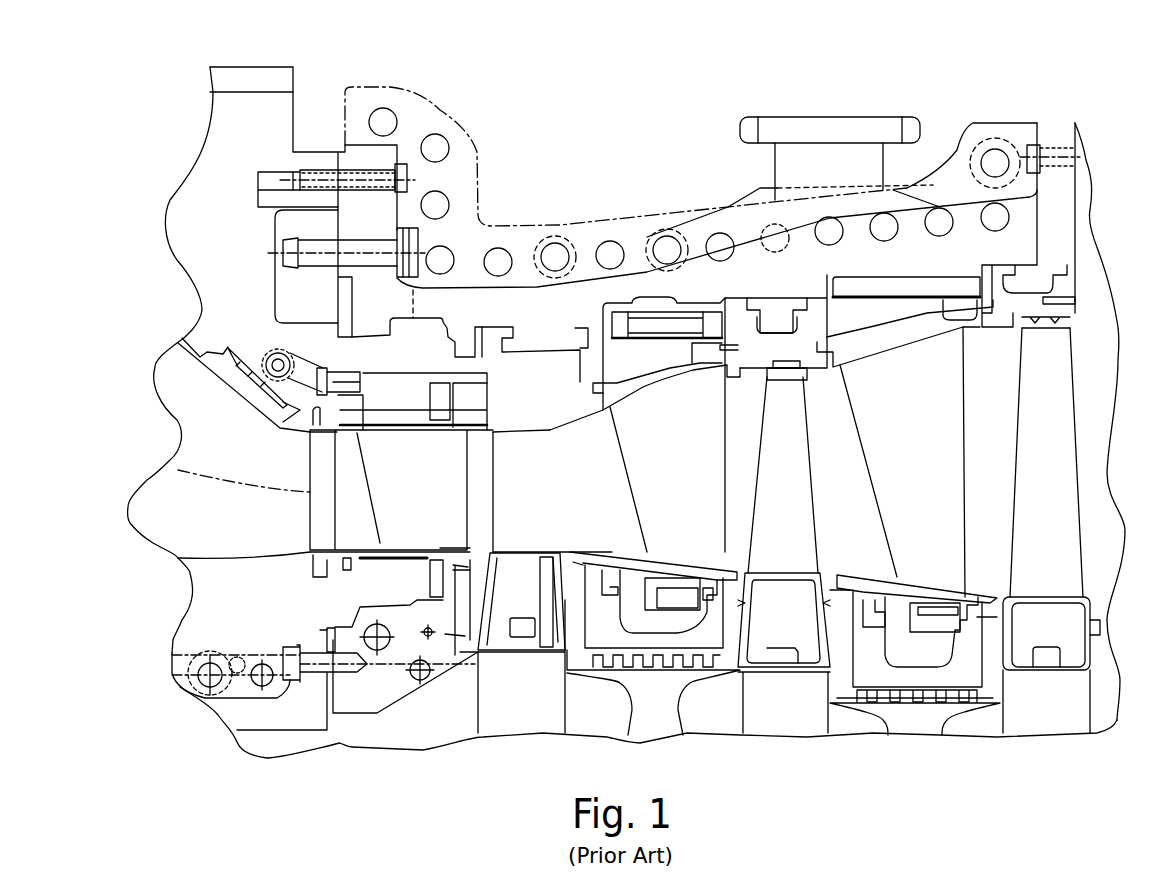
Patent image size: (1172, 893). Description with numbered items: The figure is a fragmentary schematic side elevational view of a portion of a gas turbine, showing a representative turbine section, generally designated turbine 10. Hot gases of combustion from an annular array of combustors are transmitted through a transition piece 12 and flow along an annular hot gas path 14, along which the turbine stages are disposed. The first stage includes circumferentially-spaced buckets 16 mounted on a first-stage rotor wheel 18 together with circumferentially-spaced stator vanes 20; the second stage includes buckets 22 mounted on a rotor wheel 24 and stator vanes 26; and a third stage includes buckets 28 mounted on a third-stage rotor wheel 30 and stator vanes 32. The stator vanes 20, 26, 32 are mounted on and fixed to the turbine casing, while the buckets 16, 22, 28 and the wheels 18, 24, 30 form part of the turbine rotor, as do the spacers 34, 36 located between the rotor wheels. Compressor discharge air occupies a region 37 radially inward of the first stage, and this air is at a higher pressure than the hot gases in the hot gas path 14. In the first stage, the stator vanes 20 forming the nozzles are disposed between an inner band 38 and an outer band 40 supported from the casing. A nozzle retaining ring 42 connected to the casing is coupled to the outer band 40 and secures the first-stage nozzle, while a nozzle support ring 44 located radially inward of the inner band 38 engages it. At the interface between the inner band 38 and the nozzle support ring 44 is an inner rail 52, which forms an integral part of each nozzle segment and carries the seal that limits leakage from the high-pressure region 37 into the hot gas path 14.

The turbine 10 is at (553, 150).
The transition piece 12 is at (192, 417).
The hot gas path 14 is at (582, 428).
The buckets 16 is at (547, 460).
The first-stage rotor wheel 18 is at (507, 720).
The stator vanes 20 is at (380, 467).
The buckets 22 is at (803, 467).
The rotor wheel 24 is at (785, 722).
The stator vanes 26 is at (665, 447).
The buckets 28 is at (1070, 460).
The third-stage rotor wheel 30 is at (1050, 728).
The stator vanes 32 is at (908, 444).
The spacer 34 is at (655, 723).
The spacer 36 is at (923, 727).
The region 37 is at (277, 618).
The inner band 38 is at (407, 550).
The outer band 40 is at (427, 430).
The nozzle retaining ring 42 is at (370, 373).
The nozzle support ring 44 is at (457, 597).
The inner rail 52 is at (433, 563).